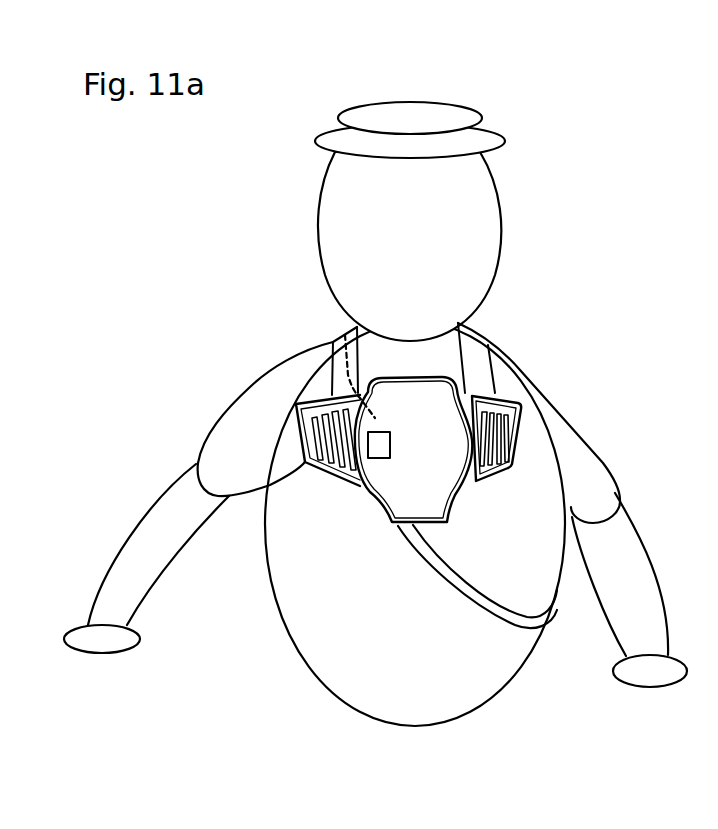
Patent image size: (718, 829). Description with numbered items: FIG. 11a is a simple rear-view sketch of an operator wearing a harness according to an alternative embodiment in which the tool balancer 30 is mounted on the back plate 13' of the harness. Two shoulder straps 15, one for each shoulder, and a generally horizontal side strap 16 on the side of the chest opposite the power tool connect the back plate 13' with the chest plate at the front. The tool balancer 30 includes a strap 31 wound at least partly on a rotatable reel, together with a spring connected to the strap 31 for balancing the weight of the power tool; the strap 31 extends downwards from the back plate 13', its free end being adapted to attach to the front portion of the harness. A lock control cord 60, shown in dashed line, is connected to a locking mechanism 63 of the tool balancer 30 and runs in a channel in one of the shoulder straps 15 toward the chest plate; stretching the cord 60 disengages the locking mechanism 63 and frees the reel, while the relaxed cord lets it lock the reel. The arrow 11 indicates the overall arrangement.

The harness 11 is at (520, 492).
The back plate 13' is at (564, 407).
The shoulder straps 15 is at (338, 386).
The side strap 16 is at (283, 470).
The tool balancer 30 is at (402, 483).
The strap 31 is at (512, 617).
The lock control cord 60 is at (337, 392).
The locking mechanism 63 is at (370, 458).